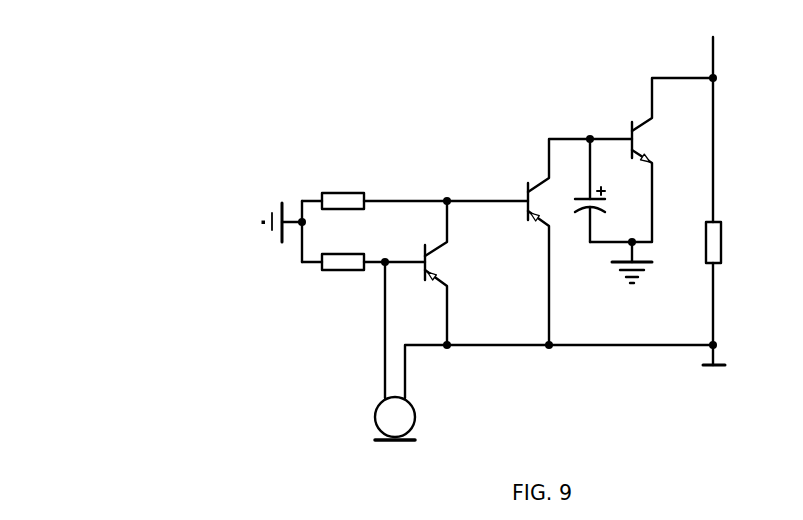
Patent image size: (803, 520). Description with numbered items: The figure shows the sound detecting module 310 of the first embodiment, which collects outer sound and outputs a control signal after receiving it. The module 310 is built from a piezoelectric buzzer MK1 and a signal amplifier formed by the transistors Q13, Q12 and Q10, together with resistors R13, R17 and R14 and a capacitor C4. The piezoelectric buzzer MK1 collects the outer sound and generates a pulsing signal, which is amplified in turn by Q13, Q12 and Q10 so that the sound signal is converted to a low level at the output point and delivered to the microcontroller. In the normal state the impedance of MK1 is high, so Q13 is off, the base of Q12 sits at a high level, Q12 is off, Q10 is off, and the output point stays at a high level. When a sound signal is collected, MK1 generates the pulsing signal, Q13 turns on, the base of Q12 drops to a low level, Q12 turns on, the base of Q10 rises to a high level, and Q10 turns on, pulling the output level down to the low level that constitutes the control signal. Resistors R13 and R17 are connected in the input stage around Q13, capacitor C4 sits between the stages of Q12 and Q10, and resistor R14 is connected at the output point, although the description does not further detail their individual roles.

The sound detecting module 310 is at (457, 125).
The resistor R13 (82K) R13 is at (415, 192).
The resistor R17 (10M) R17 is at (363, 279).
The transistor Q13 is at (448, 273).
The transistor Q12 is at (559, 240).
The transistor Q10 is at (651, 162).
The electrolytic capacitor C4 (10u) C4 is at (602, 190).
The resistor R14 (10K) R14 is at (731, 283).
The piezoelectric buzzer MK1 is at (393, 363).